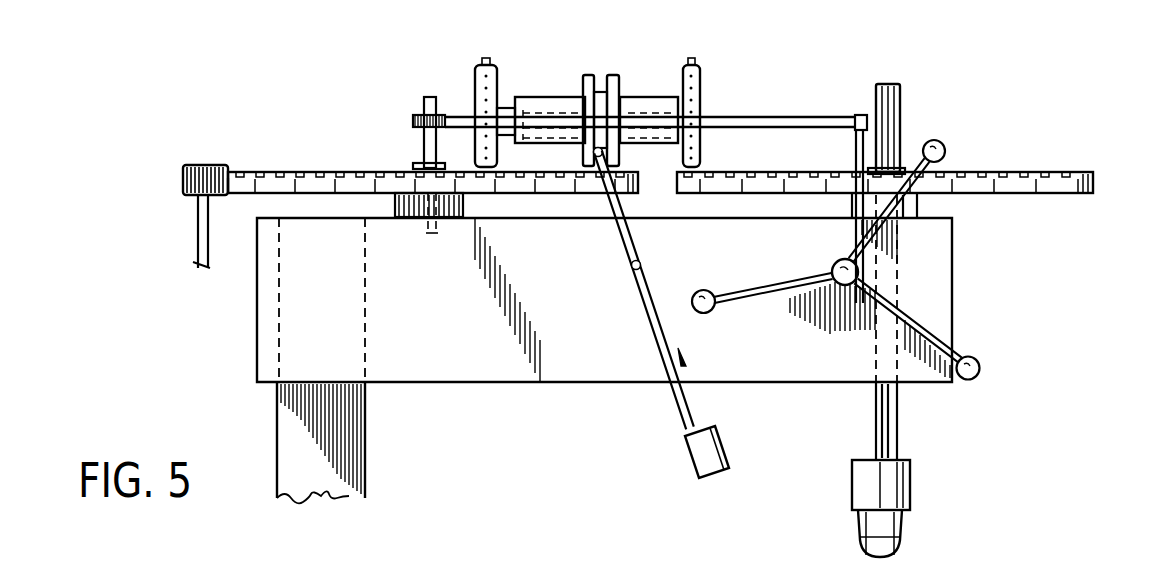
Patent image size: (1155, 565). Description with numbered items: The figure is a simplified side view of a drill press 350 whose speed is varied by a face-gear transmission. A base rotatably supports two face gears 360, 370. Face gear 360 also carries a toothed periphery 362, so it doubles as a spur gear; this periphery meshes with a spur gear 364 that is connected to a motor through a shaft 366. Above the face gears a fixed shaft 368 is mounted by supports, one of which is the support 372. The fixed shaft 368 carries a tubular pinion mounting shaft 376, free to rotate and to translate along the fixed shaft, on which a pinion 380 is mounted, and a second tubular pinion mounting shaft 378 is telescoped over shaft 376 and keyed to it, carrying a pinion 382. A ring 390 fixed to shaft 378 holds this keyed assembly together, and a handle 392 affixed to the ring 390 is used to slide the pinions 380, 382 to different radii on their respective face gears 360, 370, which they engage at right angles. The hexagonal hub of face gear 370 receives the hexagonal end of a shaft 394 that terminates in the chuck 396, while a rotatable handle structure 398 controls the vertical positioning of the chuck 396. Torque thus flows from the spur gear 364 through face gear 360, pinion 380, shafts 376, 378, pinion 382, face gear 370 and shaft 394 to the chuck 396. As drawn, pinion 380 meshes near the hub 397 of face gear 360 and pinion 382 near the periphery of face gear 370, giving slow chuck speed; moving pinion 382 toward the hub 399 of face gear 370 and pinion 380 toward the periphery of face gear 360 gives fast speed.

The drill press 350 is at (841, 94).
The face gear 360 is at (300, 123).
The toothed periphery 362 is at (253, 185).
The spur gear 364 is at (182, 170).
The shaft 366 is at (198, 217).
The fixed shaft 368 is at (797, 115).
The face gear 370 is at (1040, 173).
The support 372 is at (425, 97).
The tubular pinion mounting shaft 376 is at (503, 110).
The second tubular pinion mounting shaft 378 is at (652, 97).
The pinion 380 is at (477, 72).
The pinion 382 is at (703, 75).
The ring 390 is at (587, 75).
The handle 392 is at (665, 342).
The shaft 394 is at (902, 100).
The chuck 396 is at (910, 487).
The hub 397 is at (383, 168).
The rotatable handle structure 398 is at (928, 332).
The hub 399 is at (941, 140).